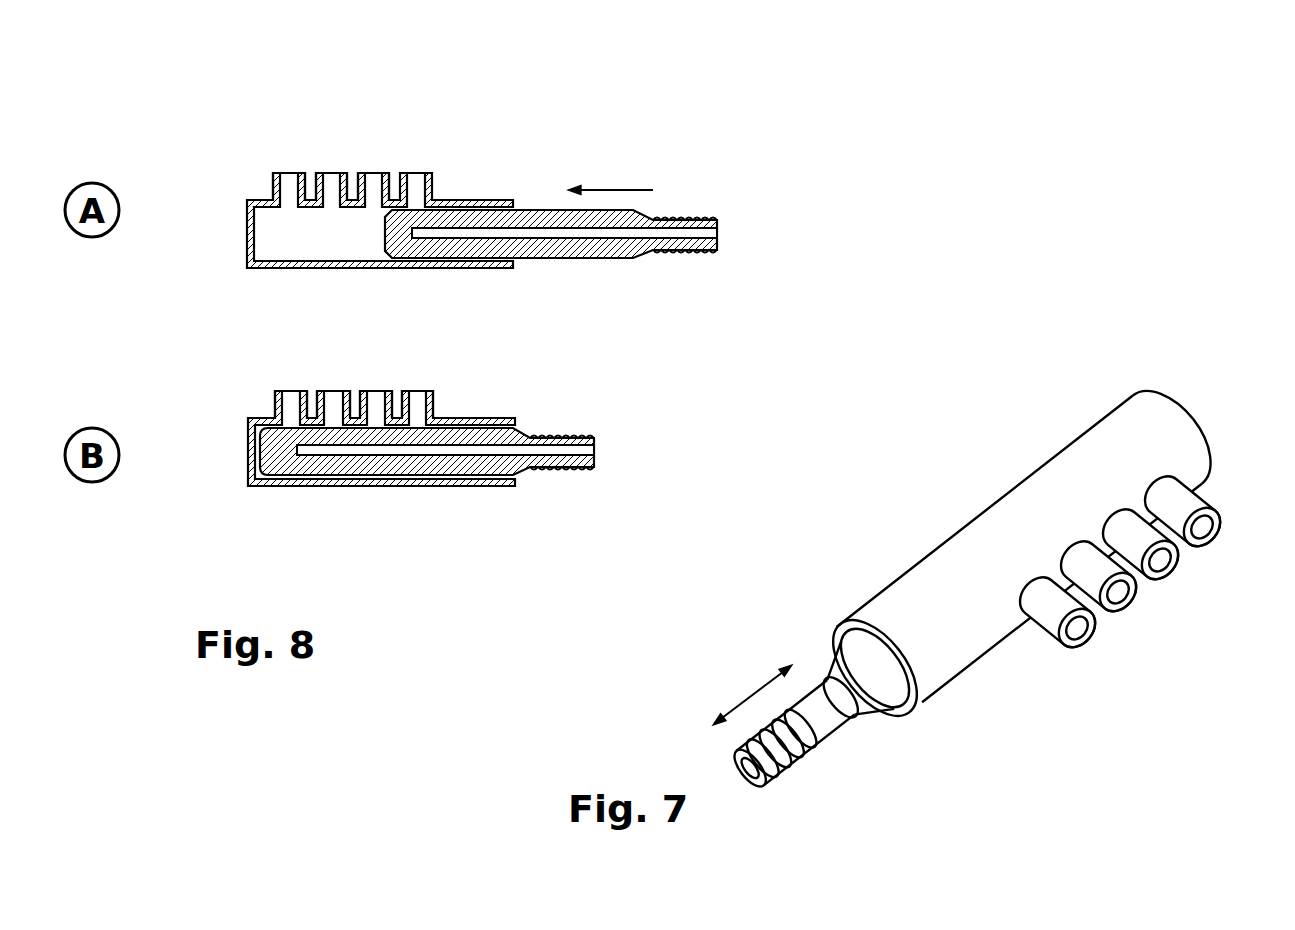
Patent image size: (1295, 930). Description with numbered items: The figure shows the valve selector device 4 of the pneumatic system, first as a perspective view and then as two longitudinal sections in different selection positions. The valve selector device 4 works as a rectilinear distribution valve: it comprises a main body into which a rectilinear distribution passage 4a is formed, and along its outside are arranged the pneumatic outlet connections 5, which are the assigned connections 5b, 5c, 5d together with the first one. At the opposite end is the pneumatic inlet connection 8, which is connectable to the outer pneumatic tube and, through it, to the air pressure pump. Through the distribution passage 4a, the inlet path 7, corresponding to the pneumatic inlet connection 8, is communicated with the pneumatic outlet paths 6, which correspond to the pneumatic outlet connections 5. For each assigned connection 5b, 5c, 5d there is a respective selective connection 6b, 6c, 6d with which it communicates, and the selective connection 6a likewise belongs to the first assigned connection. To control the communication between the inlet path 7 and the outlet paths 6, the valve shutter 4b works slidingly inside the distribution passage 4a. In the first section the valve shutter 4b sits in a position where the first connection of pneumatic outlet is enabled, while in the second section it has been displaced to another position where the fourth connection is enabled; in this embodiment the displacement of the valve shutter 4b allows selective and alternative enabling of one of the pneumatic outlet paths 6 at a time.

In FIG. 8, the valve selector device 4 is at (217, 213).
In FIG. 7, the valve selector device 4 is at (993, 523).
In FIG. 8, the rectilinear distribution passage 4a is at (302, 242).
In FIG. 8, the valve shutter 4b is at (558, 246).
In FIG. 7, the valve shutter 4b is at (853, 668).
In FIG. 8, the pneumatic outlet connection 5 is at (455, 398).
In FIG. 7, the pneumatic outlet connection 5 is at (1227, 479).
In FIG. 8, the assigned connection 5b is at (390, 173).
In FIG. 8, the assigned connection 5c is at (346, 173).
In FIG. 8, the assigned connection 5d is at (302, 173).
In FIG. 8, the pneumatic outlet path 6 is at (333, 385).
In FIG. 7, the pneumatic outlet path 6 is at (1220, 547).
In FIG. 8, the selective connection 6a is at (417, 173).
In FIG. 8, the selective connection 6b is at (373, 173).
In FIG. 8, the selective connection 6c is at (329, 173).
In FIG. 8, the selective connection 6d is at (286, 173).
In FIG. 8, the inlet path 7 is at (523, 235).
In FIG. 8, the pneumatic inlet connection 8 is at (687, 224).
In FIG. 7, the pneumatic inlet connection 8 is at (808, 770).